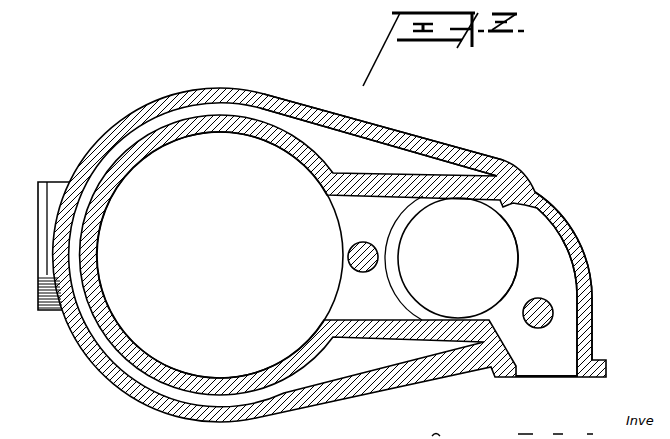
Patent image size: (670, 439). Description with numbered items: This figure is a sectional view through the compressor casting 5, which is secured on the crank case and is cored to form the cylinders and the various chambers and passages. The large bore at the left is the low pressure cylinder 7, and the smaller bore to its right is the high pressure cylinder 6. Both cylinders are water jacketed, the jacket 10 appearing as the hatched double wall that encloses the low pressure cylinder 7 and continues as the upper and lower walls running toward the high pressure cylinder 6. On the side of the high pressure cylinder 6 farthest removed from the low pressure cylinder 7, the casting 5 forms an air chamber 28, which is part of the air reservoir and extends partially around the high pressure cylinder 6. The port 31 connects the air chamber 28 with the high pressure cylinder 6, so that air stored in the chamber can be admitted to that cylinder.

The casting 5 is at (411, 139).
The high pressure cylinder 6 is at (478, 200).
The low pressure cylinder 7 is at (113, 182).
The water jacket 10 is at (330, 411).
The air chamber 28 is at (565, 258).
The port 31 is at (519, 259).